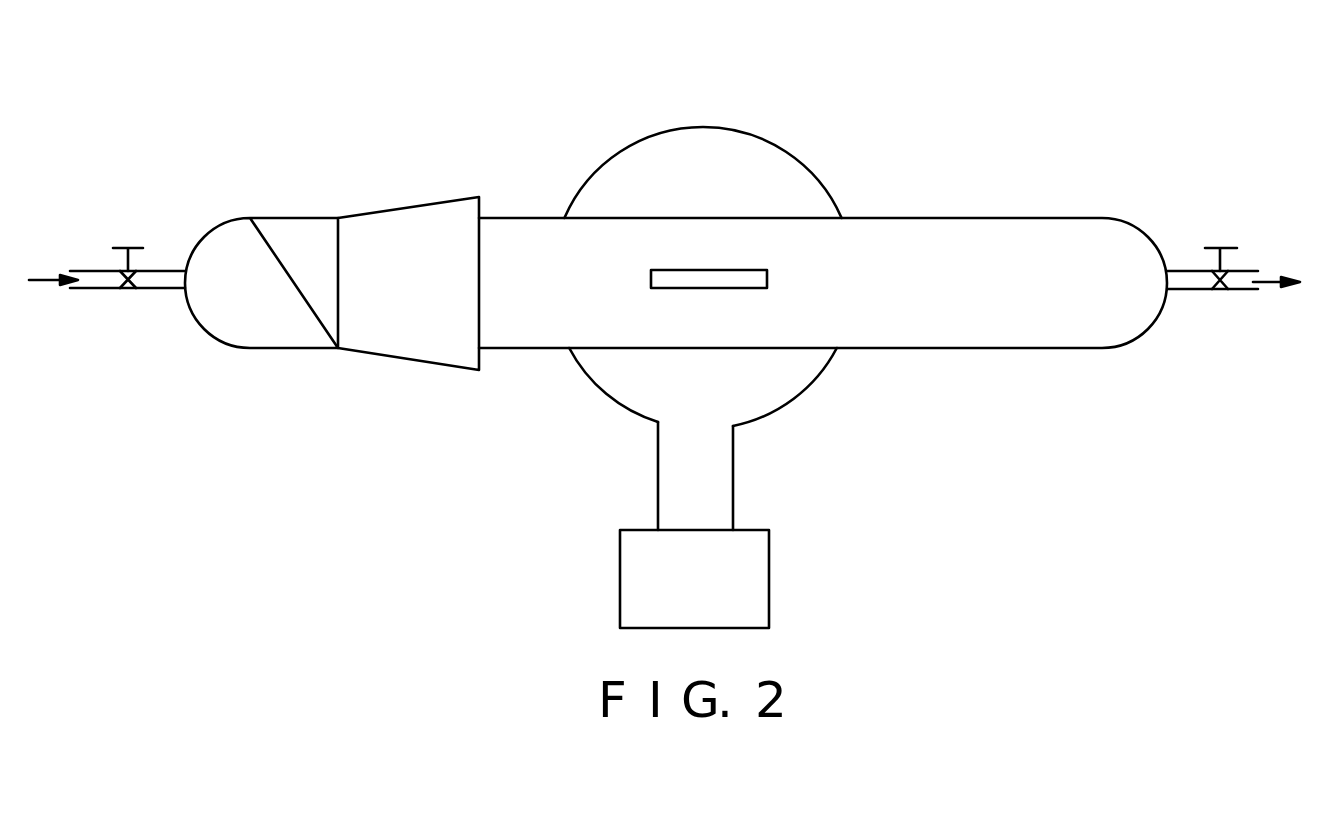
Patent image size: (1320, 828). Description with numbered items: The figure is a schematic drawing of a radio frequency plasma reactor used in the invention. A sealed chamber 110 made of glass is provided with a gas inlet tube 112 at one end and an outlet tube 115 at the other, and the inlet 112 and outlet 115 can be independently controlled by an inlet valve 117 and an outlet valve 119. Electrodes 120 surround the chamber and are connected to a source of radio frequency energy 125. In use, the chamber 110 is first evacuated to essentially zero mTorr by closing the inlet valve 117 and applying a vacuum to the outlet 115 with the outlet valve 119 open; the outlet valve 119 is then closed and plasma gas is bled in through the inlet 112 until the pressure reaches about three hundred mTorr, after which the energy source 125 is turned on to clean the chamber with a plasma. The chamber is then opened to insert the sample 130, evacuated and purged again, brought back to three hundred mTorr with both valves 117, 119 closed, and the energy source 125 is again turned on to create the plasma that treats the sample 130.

The sealed chamber 110 is at (935, 218).
The gas inlet tube 112 is at (82, 271).
The outlet tube 115 is at (1247, 271).
The inlet valve 117 is at (135, 248).
The outlet valve 119 is at (1213, 248).
The electrodes 120 is at (772, 141).
The source of radio frequency energy 125 is at (769, 573).
The sample 130 is at (760, 270).